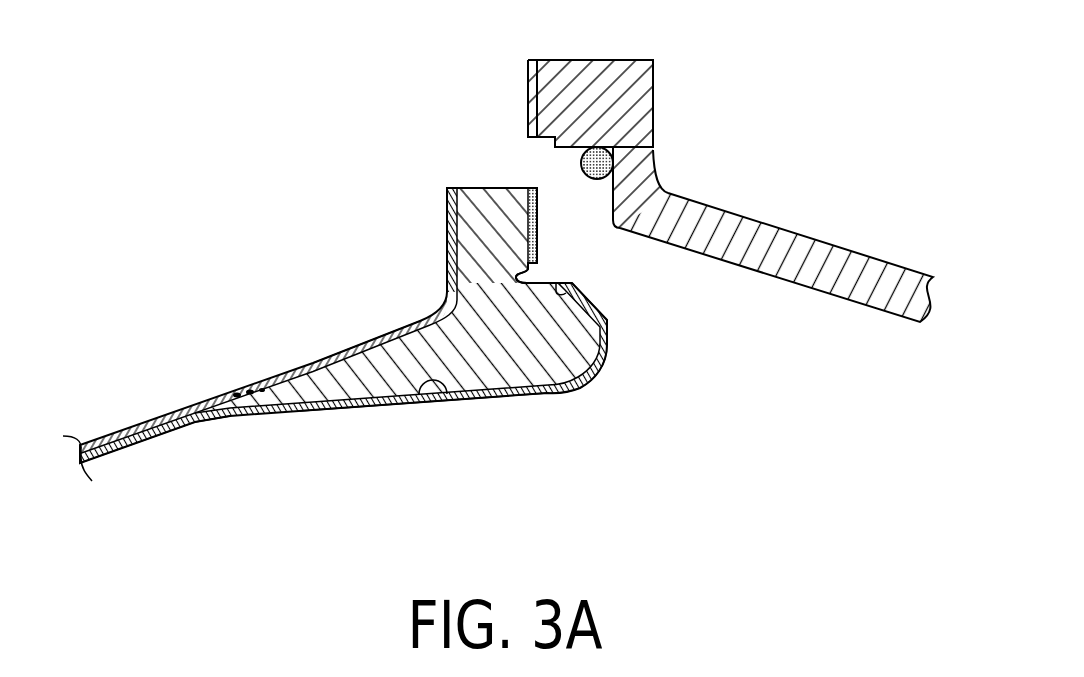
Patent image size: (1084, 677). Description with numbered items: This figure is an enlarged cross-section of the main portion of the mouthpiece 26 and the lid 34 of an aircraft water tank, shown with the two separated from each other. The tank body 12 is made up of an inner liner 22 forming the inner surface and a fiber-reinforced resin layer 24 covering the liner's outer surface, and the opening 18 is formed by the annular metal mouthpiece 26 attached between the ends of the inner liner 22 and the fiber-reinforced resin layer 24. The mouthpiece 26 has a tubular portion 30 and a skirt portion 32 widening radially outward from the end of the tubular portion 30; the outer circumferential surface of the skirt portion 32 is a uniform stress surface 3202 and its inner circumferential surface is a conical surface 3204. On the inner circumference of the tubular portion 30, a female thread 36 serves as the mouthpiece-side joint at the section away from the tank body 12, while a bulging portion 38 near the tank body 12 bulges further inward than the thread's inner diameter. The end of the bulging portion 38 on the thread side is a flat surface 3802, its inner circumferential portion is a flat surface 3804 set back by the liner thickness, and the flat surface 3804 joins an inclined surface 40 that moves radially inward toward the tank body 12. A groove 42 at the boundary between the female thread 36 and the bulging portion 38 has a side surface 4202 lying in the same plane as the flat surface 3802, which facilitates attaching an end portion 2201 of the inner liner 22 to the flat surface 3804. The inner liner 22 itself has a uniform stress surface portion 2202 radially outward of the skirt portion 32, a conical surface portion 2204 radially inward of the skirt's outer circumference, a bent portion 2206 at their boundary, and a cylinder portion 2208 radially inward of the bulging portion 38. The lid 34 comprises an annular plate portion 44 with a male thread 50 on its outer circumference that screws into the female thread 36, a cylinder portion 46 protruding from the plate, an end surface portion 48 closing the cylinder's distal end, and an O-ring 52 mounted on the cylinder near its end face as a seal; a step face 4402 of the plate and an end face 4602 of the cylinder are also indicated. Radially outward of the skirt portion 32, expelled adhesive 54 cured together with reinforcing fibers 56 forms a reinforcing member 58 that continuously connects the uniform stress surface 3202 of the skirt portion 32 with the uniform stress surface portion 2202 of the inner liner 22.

The tank body 12 is at (402, 338).
The opening 18 is at (778, 384).
The inner liner 22 is at (411, 403).
The end portion of the inner liner 2201 is at (560, 286).
The uniform stress surface portion 2202 is at (122, 448).
The conical surface portion 2204 is at (448, 398).
The bent portion 2206 is at (213, 420).
The cylinder portion 2208 is at (606, 356).
The fiber-reinforced resin layer 24 is at (192, 404).
The mouthpiece 26 is at (355, 319).
The tubular portion 30 is at (484, 311).
The skirt portion 32 is at (400, 387).
The uniform stress surface 3202 is at (375, 345).
The conical surface 3204 is at (397, 398).
The lid 34 is at (772, 211).
The female thread 36 is at (537, 217).
The bulging portion 38 is at (587, 350).
The flat surface 3802 is at (538, 283).
The flat surface 3804 is at (566, 336).
The inclined surface 40 is at (590, 300).
The groove 42 is at (518, 252).
The side surface 4202 is at (540, 286).
The annular plate portion 44 is at (544, 83).
The molding step surface 4402 is at (563, 150).
The cylinder portion 46 is at (674, 164).
The edge end face 4602 is at (612, 155).
The end surface portion 48 is at (866, 263).
The male thread 50 is at (528, 83).
The O-ring 52 is at (594, 148).
The adhesive 54 is at (252, 390).
The reinforcing fibers 56 is at (238, 394).
The reinforcing member 58 is at (258, 416).